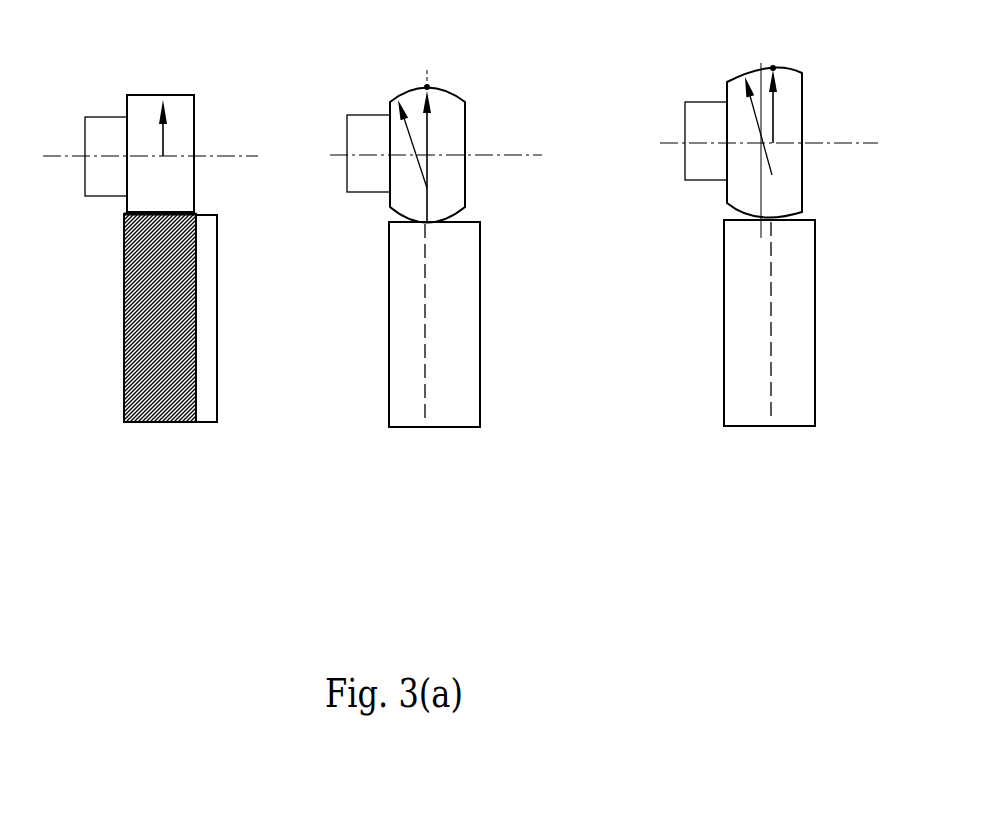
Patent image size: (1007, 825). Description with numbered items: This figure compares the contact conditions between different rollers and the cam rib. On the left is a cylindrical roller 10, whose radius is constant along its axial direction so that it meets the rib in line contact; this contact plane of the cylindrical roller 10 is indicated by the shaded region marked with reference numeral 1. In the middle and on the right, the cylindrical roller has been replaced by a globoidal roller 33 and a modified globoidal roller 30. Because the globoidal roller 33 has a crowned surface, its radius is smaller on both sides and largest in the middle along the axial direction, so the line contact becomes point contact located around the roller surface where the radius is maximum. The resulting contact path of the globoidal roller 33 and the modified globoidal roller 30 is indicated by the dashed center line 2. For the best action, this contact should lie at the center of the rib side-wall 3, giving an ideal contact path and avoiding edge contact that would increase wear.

The cylindrical roller 10 is at (184, 173).
The contact plane 1 is at (197, 313).
The globoidal roller 33 is at (445, 192).
The contact path 2 is at (771, 335).
The modified globoidal roller 30 is at (785, 172).
The rib side-wall 3 is at (755, 413).